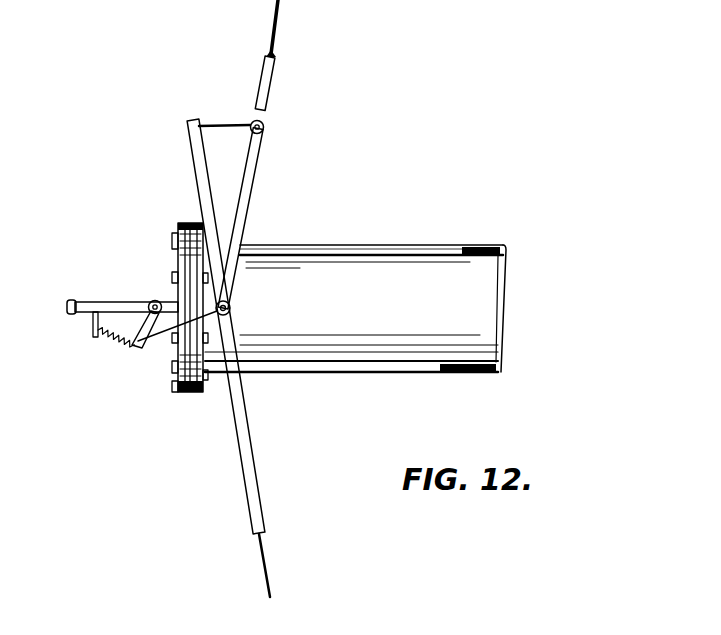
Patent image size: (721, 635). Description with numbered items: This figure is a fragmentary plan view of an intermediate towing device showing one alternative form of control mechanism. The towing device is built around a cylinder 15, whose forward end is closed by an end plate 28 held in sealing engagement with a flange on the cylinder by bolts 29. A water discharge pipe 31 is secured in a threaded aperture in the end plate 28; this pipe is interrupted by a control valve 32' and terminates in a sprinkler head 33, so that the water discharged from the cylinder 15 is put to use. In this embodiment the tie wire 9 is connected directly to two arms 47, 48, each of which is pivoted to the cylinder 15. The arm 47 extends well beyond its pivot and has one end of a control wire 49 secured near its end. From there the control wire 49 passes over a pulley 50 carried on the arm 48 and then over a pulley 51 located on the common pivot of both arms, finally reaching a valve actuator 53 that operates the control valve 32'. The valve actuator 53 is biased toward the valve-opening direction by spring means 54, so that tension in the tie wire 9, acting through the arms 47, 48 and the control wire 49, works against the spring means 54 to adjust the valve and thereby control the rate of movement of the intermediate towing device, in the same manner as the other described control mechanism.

The tie wire 9 is at (277, 28).
The cylinder 15 is at (429, 270).
The end plate 28 is at (181, 222).
The bolts 29 is at (398, 243).
The water discharge pipe 31 is at (100, 302).
The control valve 32' is at (143, 288).
The sprinkler head 33 is at (70, 301).
The arm 47 is at (244, 432).
The arm 48 is at (264, 103).
The control wire 49 is at (255, 198).
The pulley 50 is at (266, 127).
The pulley 51 is at (231, 308).
The valve actuator 53 is at (150, 336).
The spring means 54 is at (108, 343).